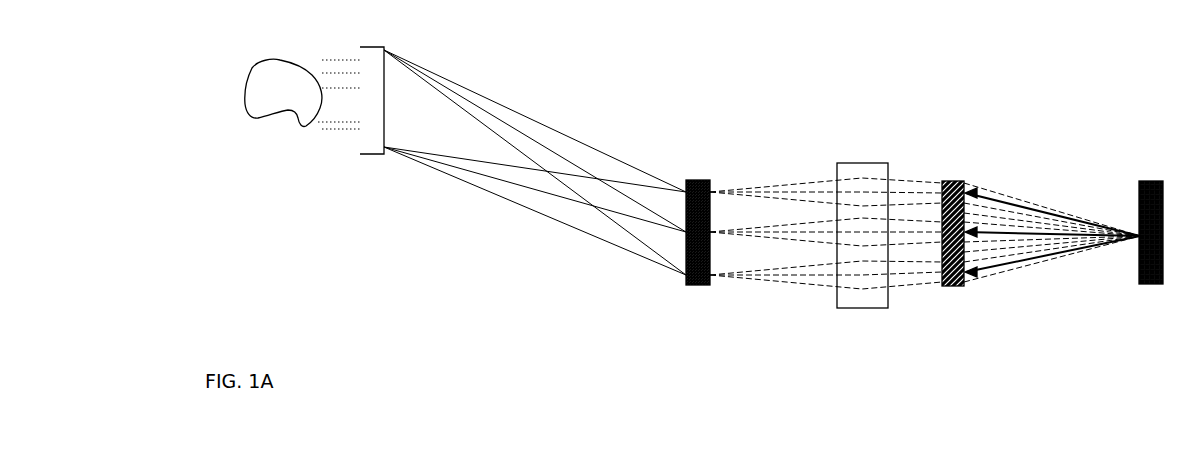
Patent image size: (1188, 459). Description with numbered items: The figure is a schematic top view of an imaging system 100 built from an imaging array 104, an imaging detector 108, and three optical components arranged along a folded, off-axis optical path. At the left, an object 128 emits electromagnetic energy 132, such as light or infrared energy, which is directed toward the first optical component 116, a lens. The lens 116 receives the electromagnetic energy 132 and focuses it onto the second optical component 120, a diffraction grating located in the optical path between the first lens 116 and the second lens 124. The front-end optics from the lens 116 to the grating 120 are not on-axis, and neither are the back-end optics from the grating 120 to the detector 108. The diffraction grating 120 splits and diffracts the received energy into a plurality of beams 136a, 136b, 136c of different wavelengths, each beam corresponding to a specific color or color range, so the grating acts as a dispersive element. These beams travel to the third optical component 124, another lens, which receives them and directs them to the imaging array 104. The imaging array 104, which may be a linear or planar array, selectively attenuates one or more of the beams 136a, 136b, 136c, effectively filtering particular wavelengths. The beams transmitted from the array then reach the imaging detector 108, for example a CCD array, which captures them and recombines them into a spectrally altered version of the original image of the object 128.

The imaging system 100 is at (335, 268).
The imaging array 104 is at (1139, 185).
The imaging detector 108 is at (960, 287).
The first optical component 116 is at (369, 47).
The second optical component 120 is at (702, 180).
The third optical component 124 is at (863, 163).
The object 128 is at (252, 67).
The electromagnetic energy 132 is at (327, 59).
The beam 136a is at (778, 187).
The beam 136b is at (782, 242).
The beam 136c is at (813, 283).